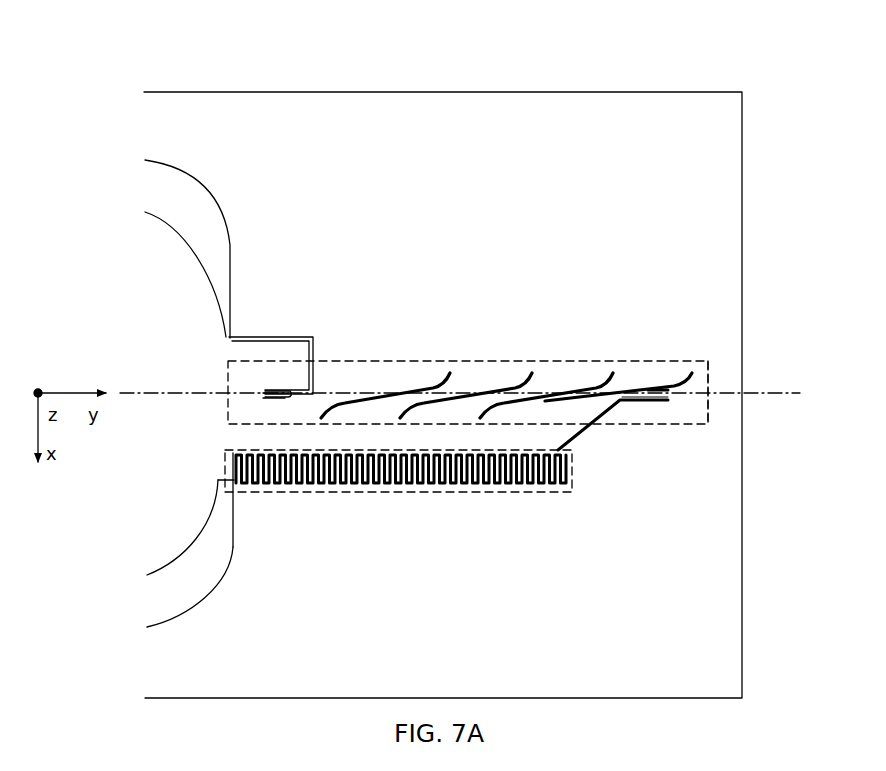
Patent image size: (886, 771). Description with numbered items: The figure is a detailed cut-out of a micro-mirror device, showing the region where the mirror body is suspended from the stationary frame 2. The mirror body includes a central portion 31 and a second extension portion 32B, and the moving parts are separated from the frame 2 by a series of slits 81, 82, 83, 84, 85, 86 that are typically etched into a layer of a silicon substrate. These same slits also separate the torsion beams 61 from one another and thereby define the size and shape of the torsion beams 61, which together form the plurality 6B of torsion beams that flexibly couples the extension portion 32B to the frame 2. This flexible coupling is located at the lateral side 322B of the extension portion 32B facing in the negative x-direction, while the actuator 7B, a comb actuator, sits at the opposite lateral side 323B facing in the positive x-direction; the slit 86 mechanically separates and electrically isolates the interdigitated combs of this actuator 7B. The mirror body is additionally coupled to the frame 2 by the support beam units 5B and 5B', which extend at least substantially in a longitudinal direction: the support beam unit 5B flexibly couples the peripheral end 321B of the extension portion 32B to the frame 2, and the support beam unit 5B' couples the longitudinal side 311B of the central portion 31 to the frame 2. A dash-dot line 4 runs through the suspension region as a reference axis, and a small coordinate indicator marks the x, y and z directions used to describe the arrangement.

The frame 2 is at (688, 660).
The central axis 4 is at (754, 399).
The support beam unit 5B is at (717, 452).
The support beam unit 5B' is at (264, 221).
The plurality of torsion beams 6B is at (713, 367).
The actuator 7B is at (297, 496).
The central portion of the mirror body 31 is at (160, 282).
The longitudinal side 311B is at (260, 393).
The second extension portion 32B is at (262, 437).
The peripheral end 321B is at (615, 403).
The lateral side 322B is at (374, 427).
The lateral side 323B is at (295, 447).
The torsion beam 61 is at (489, 366).
The slit 81 is at (292, 335).
The slit 82 is at (410, 382).
The slit 83 is at (527, 366).
The slit 84 is at (612, 366).
The slit 85 is at (690, 368).
The slit 86 is at (580, 442).